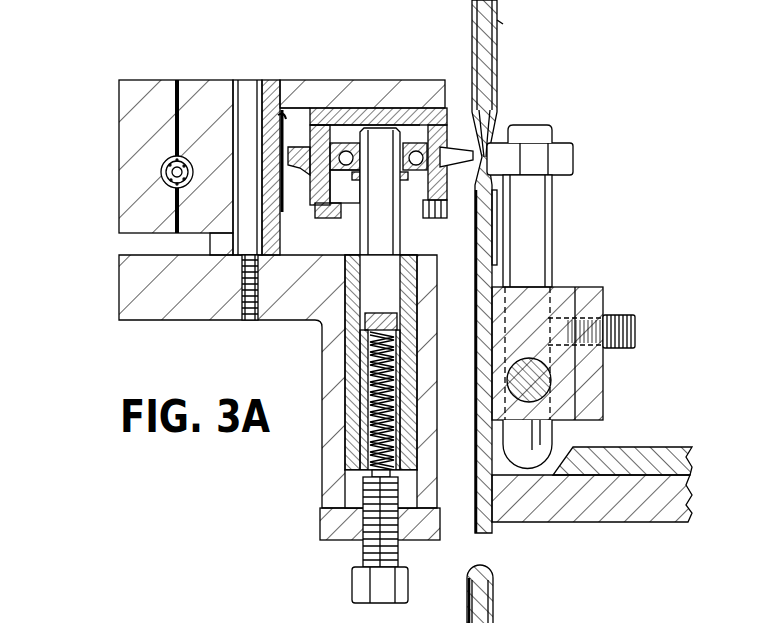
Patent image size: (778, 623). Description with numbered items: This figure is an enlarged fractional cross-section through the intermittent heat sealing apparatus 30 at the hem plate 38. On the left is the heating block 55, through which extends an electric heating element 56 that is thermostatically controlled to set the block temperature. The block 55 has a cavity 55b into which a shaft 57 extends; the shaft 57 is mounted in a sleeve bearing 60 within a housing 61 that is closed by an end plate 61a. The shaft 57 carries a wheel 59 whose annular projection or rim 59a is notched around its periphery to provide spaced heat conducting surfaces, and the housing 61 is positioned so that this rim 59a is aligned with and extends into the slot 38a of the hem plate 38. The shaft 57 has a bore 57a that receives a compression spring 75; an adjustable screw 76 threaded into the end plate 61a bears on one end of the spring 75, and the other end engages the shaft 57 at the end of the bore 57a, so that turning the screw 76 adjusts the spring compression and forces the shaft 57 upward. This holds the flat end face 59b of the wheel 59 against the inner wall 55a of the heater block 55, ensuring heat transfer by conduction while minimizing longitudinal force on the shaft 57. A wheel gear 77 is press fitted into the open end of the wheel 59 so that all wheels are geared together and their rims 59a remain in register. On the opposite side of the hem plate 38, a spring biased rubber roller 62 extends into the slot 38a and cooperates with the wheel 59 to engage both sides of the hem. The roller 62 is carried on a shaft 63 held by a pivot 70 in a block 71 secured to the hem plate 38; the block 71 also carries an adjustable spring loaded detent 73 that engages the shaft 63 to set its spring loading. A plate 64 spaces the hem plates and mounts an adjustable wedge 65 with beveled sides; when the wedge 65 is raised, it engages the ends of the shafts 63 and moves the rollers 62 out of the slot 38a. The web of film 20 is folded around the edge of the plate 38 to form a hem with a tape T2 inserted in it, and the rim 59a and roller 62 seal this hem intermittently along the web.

The heat sealing apparatus 30 is at (342, 26).
The heating block 55 is at (292, 92).
The inner wall 55a is at (312, 108).
The cavity 55b is at (282, 114).
The electric heating element 56 is at (168, 174).
The shaft 57 is at (390, 236).
The bore 57a is at (347, 460).
The wheel 59 is at (410, 108).
The annular projection or rim 59a is at (457, 147).
The flat end face 59b is at (348, 108).
The sleeve bearing 60 is at (345, 357).
The housing 61 is at (345, 382).
The end plate 61a is at (340, 540).
The rubber roller 62 is at (573, 160).
The shaft 63 is at (540, 225).
The plate 64 is at (612, 508).
The adjustable wedge 65 is at (655, 455).
The pivot 70 is at (540, 380).
The block 71 is at (565, 393).
The spring loaded detent 73 is at (620, 325).
The compression spring 75 is at (347, 395).
The adjustable screw 76 is at (408, 580).
The wheel gear 77 is at (338, 218).
The hem plate 38 is at (490, 62).
The slot 38a is at (493, 110).
The web of film 20 is at (482, 532).
The tape T2 is at (498, 22).